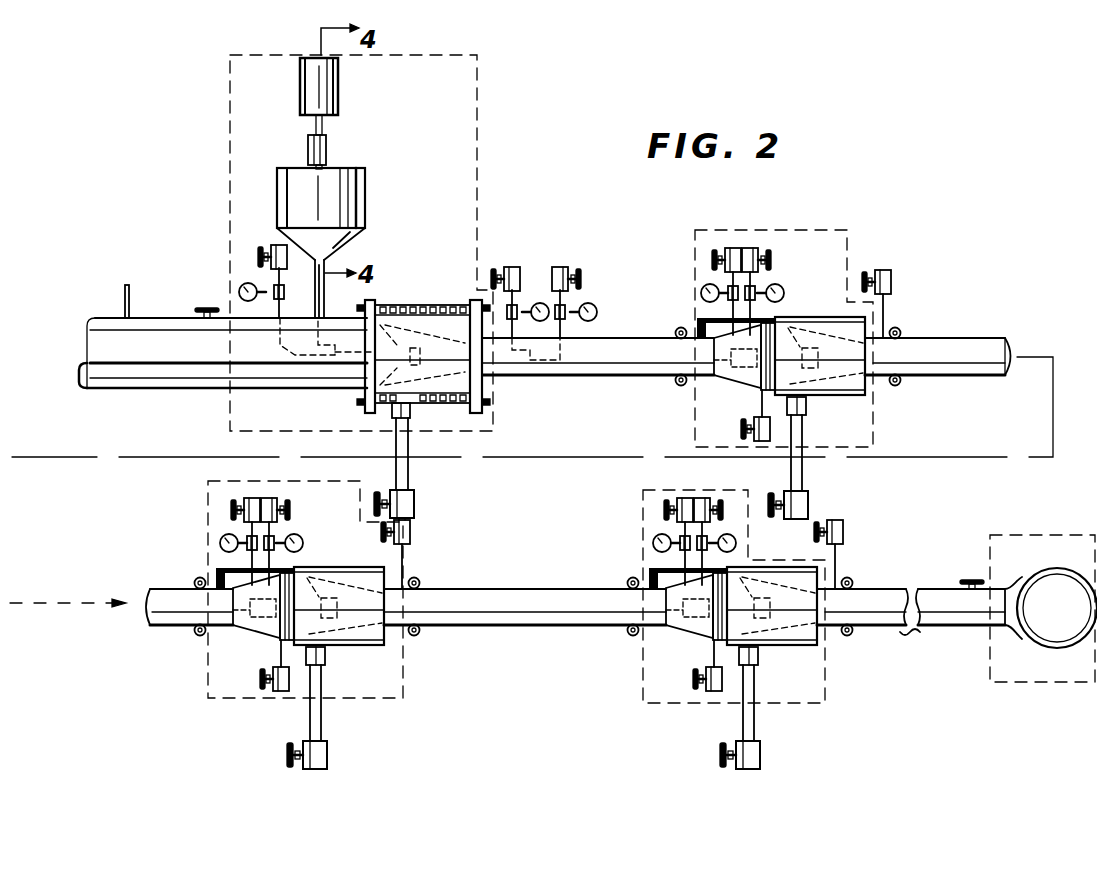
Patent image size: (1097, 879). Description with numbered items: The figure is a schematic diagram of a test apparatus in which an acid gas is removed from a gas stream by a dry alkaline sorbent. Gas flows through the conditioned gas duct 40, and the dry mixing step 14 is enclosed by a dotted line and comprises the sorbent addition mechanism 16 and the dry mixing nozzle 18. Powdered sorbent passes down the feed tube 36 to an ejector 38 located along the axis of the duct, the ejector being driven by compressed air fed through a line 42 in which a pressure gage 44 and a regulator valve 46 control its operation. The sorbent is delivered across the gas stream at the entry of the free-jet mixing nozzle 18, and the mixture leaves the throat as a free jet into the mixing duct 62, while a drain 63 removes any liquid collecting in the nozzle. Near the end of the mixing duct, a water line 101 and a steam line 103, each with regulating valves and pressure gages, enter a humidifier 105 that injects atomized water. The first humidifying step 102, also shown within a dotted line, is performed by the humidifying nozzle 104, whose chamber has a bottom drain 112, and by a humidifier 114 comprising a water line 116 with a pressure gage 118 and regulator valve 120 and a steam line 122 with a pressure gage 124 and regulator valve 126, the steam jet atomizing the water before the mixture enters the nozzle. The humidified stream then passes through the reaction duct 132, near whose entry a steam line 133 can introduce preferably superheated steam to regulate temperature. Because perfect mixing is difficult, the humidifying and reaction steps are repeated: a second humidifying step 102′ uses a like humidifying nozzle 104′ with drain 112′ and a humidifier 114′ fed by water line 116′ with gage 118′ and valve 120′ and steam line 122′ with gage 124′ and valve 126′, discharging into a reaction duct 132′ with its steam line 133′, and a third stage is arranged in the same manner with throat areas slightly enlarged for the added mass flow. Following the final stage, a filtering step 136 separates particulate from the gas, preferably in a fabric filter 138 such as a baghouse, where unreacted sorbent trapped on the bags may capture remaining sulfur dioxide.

The dry mixing step 14 is at (477, 157).
The sorbent addition mechanism 16 is at (372, 191).
The dry mixing nozzle 18 is at (437, 297).
The feed tube 36 is at (326, 303).
The ejector 38 is at (310, 372).
The conditioned gas duct 40 is at (157, 388).
The line 42 is at (283, 298).
The pressure gage 44 is at (287, 290).
The regulator valve 46 is at (272, 246).
The mixing duct 62 is at (610, 377).
The drain 63 is at (410, 421).
The water line 101 is at (566, 292).
The steam line 103 is at (533, 258).
The humidifier 105 is at (548, 372).
The first humidifying step 102 is at (834, 233).
The humidifying nozzle 104 is at (826, 311).
The drain 112 is at (808, 406).
The humidifier 114 is at (745, 386).
The water line 116 is at (771, 303).
The pressure gage 118 is at (785, 283).
The regulator valve 120 is at (771, 250).
The steam line 122 is at (706, 318).
The pressure gage 124 is at (700, 293).
The regulator valve 126 is at (712, 262).
The reaction duct 132 is at (950, 345).
The steam line 133 is at (891, 307).
The humidifying step 102′ is at (406, 527).
The humidifying nozzle 104′ is at (354, 558).
The drain 112′ is at (327, 660).
The humidifier 114′ is at (252, 634).
The water line 116′ is at (290, 566).
The pressure gage 118′ is at (303, 540).
The regulator valve 120′ is at (300, 508).
The steam line 122′ is at (250, 568).
The pressure gage 124′ is at (219, 543).
The regulator valve 126′ is at (231, 512).
The reaction duct 132′ is at (513, 588).
The steam line 133′ is at (408, 566).
The filtering step 136 is at (1062, 535).
The fabric filter 138 is at (1052, 573).